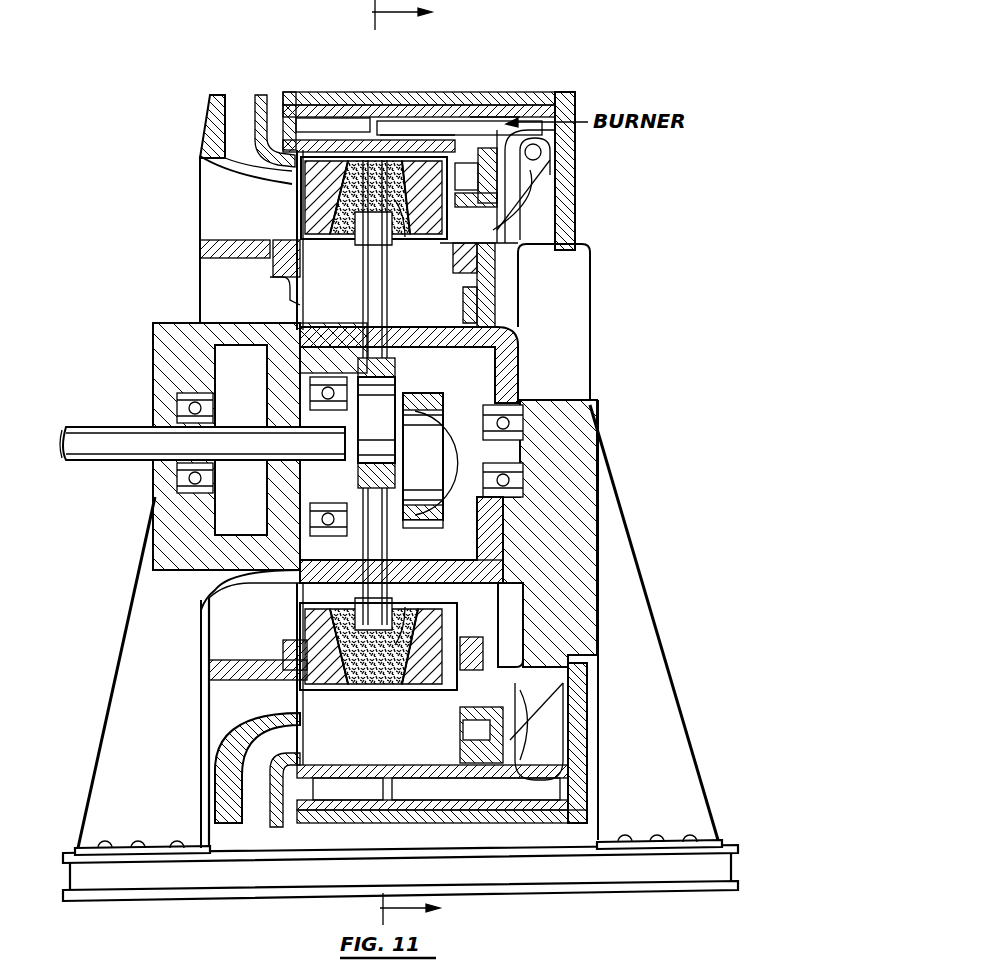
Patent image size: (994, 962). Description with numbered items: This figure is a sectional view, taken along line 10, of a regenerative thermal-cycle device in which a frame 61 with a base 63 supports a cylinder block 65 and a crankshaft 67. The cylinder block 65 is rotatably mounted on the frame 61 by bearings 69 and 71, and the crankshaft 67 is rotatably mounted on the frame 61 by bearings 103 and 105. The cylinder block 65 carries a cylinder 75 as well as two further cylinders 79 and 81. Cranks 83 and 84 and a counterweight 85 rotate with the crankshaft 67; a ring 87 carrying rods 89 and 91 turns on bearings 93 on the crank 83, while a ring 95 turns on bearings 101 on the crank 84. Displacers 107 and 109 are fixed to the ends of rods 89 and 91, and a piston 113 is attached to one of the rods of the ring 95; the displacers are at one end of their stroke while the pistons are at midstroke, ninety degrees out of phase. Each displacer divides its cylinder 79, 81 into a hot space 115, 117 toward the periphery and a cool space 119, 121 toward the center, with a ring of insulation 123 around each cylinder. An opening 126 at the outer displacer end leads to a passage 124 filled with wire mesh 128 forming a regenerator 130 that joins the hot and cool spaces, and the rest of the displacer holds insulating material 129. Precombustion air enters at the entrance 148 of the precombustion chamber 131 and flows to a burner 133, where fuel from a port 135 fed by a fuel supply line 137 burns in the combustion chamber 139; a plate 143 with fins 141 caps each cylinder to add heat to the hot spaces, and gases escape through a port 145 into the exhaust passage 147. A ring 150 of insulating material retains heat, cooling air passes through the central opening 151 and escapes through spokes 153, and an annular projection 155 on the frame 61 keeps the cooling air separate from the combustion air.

The section line 10 is at (421, 462).
The frame 61 is at (585, 410).
The base 63 is at (675, 681).
The cylinder block 65 is at (508, 345).
The crankshaft 67 is at (86, 452).
The bearing 69 is at (527, 420).
The bearing 71 is at (348, 533).
The cylinder 75 is at (446, 500).
The cylinder 79 is at (296, 226).
The cylinder 81 is at (307, 703).
The crank 83 is at (388, 400).
The crank 84 is at (432, 437).
The counterweight 85 is at (253, 501).
The ring 87 is at (362, 366).
The rod 89 is at (363, 284).
The rod 91 is at (386, 557).
The bearings 93 is at (410, 365).
The ring 95 is at (411, 384).
The bearings 101 is at (422, 497).
The bearing 103 is at (183, 471).
The bearing 105 is at (330, 420).
The displacer 107 is at (445, 250).
The displacer 109 is at (330, 692).
The piston 113 is at (450, 528).
The hot space 115 is at (392, 138).
The hot space 117 is at (447, 701).
The cool space 119 is at (433, 313).
The cool space 121 is at (440, 595).
The ring of insulation 123 is at (278, 262).
The passage 124 is at (357, 155).
The opening 126 is at (410, 160).
The wire mesh 128 is at (352, 243).
The insulating material 129 is at (452, 131).
The regenerator 130 is at (306, 186).
The precombustion chamber 131 is at (225, 232).
The burner 133 is at (504, 104).
The port 135 is at (565, 152).
The fuel supply line 137 is at (565, 183).
The combustion chamber 139 is at (482, 118).
The fins 141 is at (357, 96).
The plate 143 is at (352, 141).
The port 145 is at (481, 207).
The exhaust passage 147 is at (240, 107).
The entrance 148 is at (200, 200).
The ring of insulating material 150 is at (560, 92).
The central opening 151 is at (213, 262).
The spokes 153 is at (577, 307).
The annular projection 155 is at (565, 224).